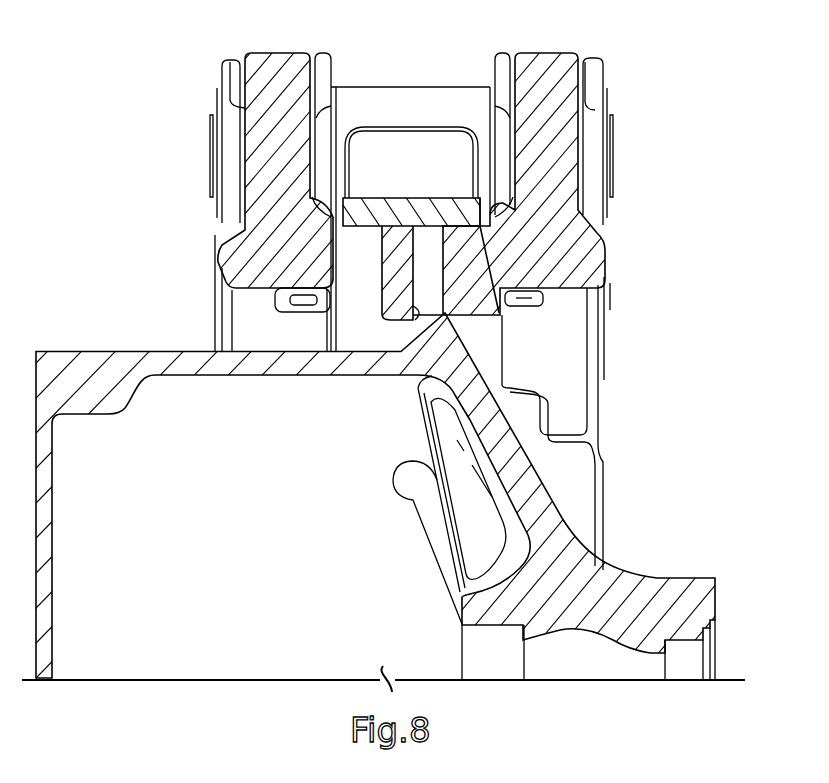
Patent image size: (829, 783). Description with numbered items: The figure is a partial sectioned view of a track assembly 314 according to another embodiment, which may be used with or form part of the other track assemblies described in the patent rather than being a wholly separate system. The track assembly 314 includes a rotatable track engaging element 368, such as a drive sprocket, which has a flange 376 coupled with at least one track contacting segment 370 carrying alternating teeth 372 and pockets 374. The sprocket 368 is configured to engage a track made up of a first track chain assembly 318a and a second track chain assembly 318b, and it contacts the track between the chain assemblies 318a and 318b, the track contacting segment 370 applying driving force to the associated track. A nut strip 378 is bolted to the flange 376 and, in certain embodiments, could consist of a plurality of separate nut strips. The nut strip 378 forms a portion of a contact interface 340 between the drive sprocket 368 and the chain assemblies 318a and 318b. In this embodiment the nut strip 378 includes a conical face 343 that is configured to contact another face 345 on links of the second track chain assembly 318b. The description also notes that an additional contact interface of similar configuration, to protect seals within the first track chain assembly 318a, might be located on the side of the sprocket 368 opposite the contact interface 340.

The track assembly 314 is at (687, 293).
The first track chain assembly 318a is at (277, 72).
The second track chain assembly 318b is at (543, 72).
The contact interface 340 is at (508, 295).
The conical face 343 is at (495, 259).
The face 345 is at (490, 275).
The rotatable track engaging element 368 is at (631, 567).
The track contacting segment 370 is at (353, 225).
The teeth 372 is at (407, 138).
The pockets 374 is at (345, 190).
The flange 376 is at (413, 318).
The nut strip 378 is at (458, 334).